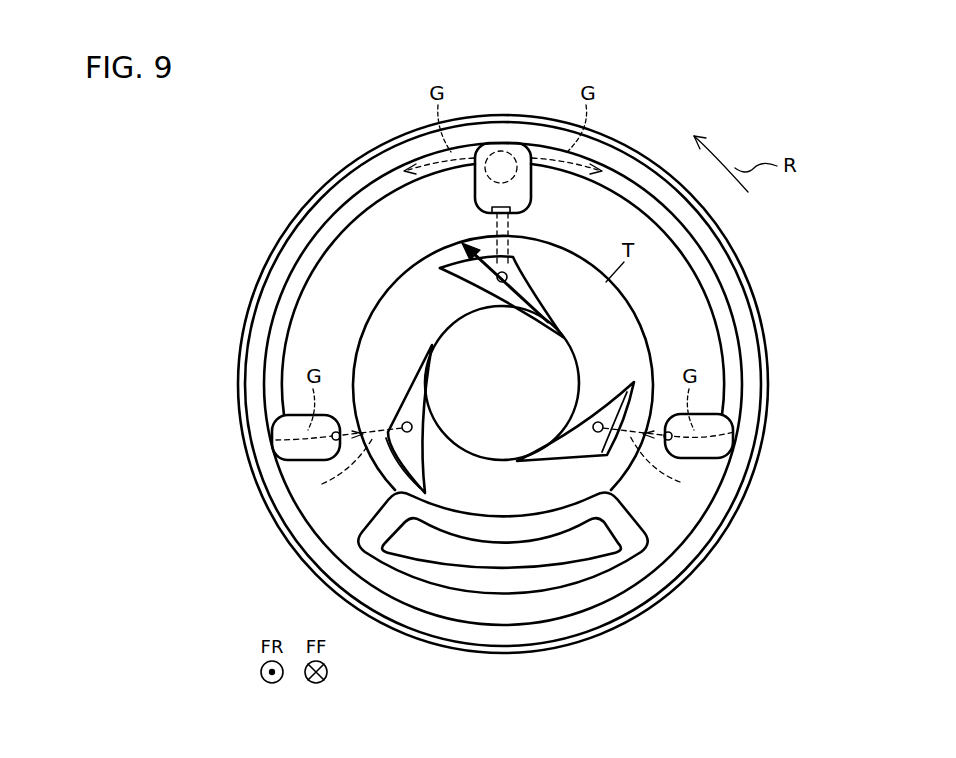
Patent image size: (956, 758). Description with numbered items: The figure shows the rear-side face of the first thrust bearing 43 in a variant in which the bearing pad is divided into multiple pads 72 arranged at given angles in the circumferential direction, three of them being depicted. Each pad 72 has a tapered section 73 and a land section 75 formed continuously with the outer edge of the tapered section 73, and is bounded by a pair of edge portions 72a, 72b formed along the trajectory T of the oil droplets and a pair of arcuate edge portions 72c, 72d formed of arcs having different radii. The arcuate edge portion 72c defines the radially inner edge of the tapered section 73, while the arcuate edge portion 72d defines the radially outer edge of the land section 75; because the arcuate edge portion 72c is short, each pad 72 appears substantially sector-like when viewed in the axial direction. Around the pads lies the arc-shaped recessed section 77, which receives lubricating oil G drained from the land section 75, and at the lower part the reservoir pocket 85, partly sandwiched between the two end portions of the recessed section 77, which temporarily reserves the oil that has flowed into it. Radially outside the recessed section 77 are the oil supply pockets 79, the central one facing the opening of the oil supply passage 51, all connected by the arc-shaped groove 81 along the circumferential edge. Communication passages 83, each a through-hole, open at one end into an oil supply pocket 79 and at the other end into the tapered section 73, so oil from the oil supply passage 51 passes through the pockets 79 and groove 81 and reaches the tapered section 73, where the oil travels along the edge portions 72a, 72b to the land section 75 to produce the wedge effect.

The thrust bearing 43 is at (322, 136).
The oil supply passage 51 is at (500, 119).
The groove 81 is at (346, 214).
The oil supply pocket 79 is at (474, 198).
The communication passage 83 is at (508, 258).
The recessed section 77 is at (626, 327).
The pad 72 is at (430, 449).
The edge portion 72a is at (488, 305).
The edge portion 72b is at (538, 283).
The arcuate edge portion 72c is at (549, 314).
The arcuate edge portion 72d is at (452, 257).
The tapered section 73 is at (488, 276).
The land section 75 is at (468, 278).
The reservoir pocket 85 is at (472, 612).